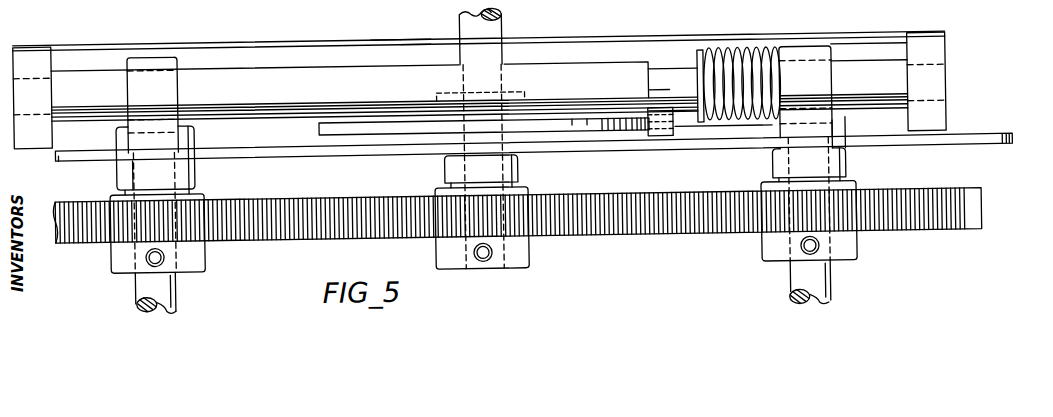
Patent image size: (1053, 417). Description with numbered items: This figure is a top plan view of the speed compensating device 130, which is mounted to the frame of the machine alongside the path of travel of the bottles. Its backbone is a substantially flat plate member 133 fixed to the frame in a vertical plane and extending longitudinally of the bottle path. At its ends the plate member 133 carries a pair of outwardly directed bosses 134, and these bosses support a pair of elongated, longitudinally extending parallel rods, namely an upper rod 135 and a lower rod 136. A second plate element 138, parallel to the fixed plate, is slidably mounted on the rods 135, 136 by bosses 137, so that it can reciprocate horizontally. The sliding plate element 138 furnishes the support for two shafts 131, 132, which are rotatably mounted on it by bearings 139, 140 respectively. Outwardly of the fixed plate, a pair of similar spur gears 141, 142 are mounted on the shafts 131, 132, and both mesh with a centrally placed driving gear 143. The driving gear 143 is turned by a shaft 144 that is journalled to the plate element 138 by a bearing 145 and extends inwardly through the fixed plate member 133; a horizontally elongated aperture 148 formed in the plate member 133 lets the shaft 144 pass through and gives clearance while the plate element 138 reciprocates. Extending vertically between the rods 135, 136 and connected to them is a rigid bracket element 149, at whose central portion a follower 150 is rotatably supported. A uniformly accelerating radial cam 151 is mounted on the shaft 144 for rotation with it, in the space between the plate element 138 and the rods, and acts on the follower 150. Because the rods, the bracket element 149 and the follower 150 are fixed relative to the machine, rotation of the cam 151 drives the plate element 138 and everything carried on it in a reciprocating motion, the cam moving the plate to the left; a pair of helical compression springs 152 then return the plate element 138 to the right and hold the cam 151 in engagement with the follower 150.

The speed compensating device 130 is at (957, 83).
The shaft 131 is at (170, 308).
The shaft 132 is at (825, 296).
The plate member 133 is at (326, 32).
The bosses 134 is at (27, 63).
The upper rod 135 is at (280, 99).
The lower rod 136 is at (394, 2).
The bosses 137 is at (157, 67).
The plate element 138 is at (296, 160).
The bearing 139 is at (115, 175).
The bearing 140 is at (775, 174).
The spur gear 141 is at (284, 247).
The spur gear 142 is at (738, 239).
The driving gear 143 is at (596, 243).
The shaft 144 is at (501, 40).
The bearing 145 is at (517, 176).
The aperture 148 is at (427, 35).
The bracket element 149 is at (656, 90).
The follower 150 is at (670, 141).
The radial cam 151 is at (413, 134).
The helical compression springs 152 is at (729, 35).